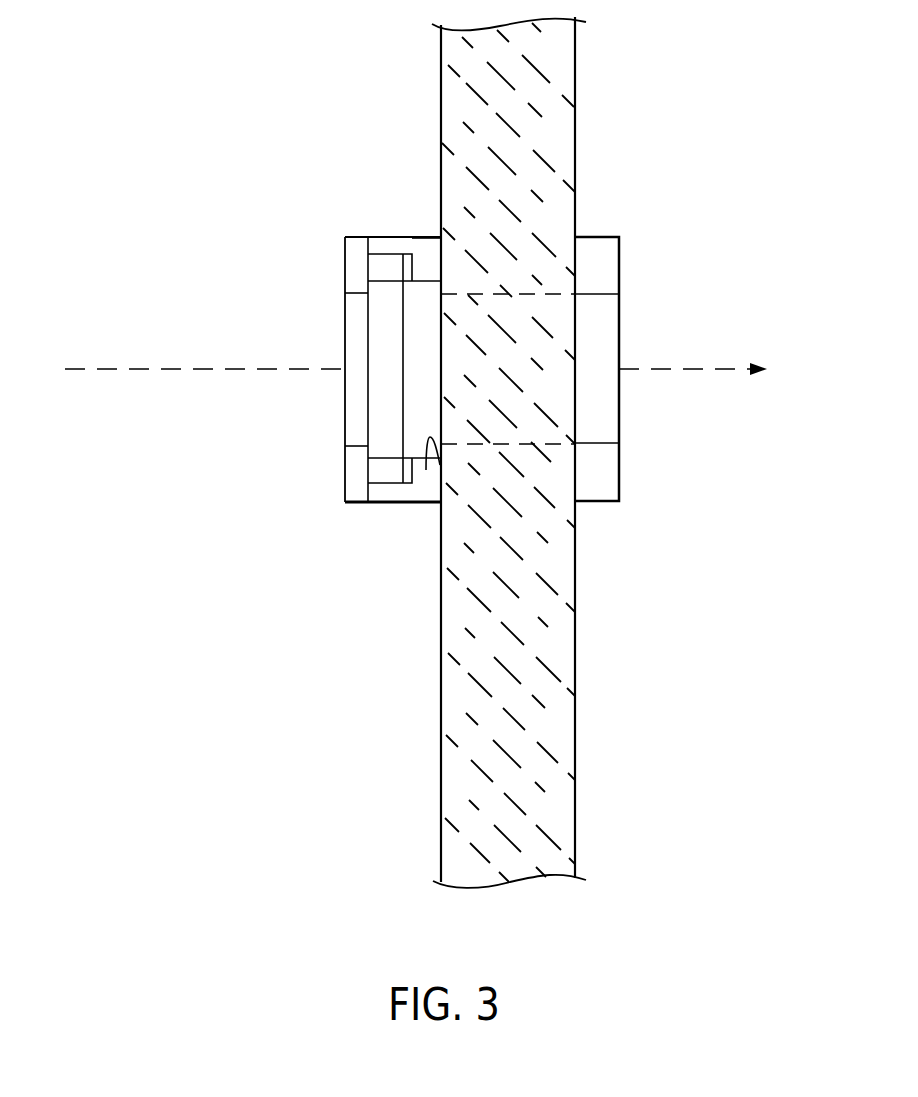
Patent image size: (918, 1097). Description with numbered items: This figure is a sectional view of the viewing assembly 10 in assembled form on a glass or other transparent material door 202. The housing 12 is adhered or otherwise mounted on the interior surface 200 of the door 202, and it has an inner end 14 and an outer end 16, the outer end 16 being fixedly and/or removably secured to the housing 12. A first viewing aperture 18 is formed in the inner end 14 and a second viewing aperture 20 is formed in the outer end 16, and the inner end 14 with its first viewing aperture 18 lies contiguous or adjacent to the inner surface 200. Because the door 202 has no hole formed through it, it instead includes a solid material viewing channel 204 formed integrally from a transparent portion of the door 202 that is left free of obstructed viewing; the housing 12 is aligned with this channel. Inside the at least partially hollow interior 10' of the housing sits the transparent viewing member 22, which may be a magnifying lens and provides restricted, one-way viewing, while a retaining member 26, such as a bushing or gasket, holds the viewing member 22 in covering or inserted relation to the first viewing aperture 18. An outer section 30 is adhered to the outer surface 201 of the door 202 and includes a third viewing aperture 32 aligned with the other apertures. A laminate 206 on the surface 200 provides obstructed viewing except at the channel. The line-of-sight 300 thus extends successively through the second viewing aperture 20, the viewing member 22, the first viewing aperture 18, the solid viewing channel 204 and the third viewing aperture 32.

The viewing assembly 10 is at (303, 365).
The hollow interior 10' is at (305, 327).
The housing 12 is at (390, 503).
The inner end 14 is at (420, 245).
The outer end 16 is at (347, 477).
The first viewing aperture 18 is at (426, 470).
The second viewing aperture 20 is at (357, 418).
The viewing member 22 is at (412, 308).
The retaining member 26 is at (388, 262).
The outer section 30 is at (658, 453).
The third viewing aperture 32 is at (598, 443).
The interior surface 200 is at (510, 452).
The outer surface 201 is at (577, 739).
The door 202 is at (540, 823).
The solid material viewing channel 204 is at (512, 328).
The laminate 206 is at (441, 49).
The line-of-sight 300 is at (685, 369).